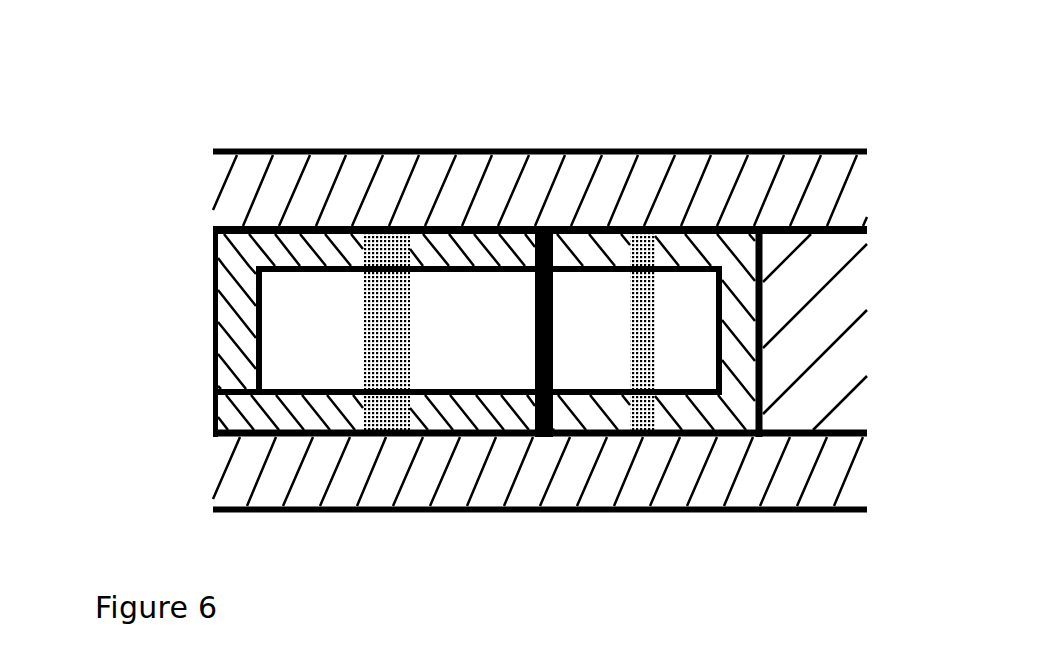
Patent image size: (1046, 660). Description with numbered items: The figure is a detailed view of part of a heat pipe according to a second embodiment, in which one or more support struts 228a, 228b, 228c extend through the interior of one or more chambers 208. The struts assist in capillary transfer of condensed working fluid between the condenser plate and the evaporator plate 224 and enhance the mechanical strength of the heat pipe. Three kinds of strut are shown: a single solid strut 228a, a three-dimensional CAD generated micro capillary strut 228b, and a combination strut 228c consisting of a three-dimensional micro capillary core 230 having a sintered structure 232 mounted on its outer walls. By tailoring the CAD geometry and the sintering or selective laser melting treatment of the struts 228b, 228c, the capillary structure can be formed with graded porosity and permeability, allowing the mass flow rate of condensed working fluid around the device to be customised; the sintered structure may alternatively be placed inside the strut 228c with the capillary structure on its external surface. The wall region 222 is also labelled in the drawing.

The chamber 208 is at (282, 303).
The housing wall 222 is at (723, 255).
The evaporator plate 224 is at (317, 188).
The single solid strut 228a is at (535, 342).
The 3D CAD generated micro capillary strut 228b is at (640, 313).
The combination strut 228c is at (363, 343).
The 3D micro capillary core 230 is at (388, 397).
The sintered structure 232 is at (411, 306).